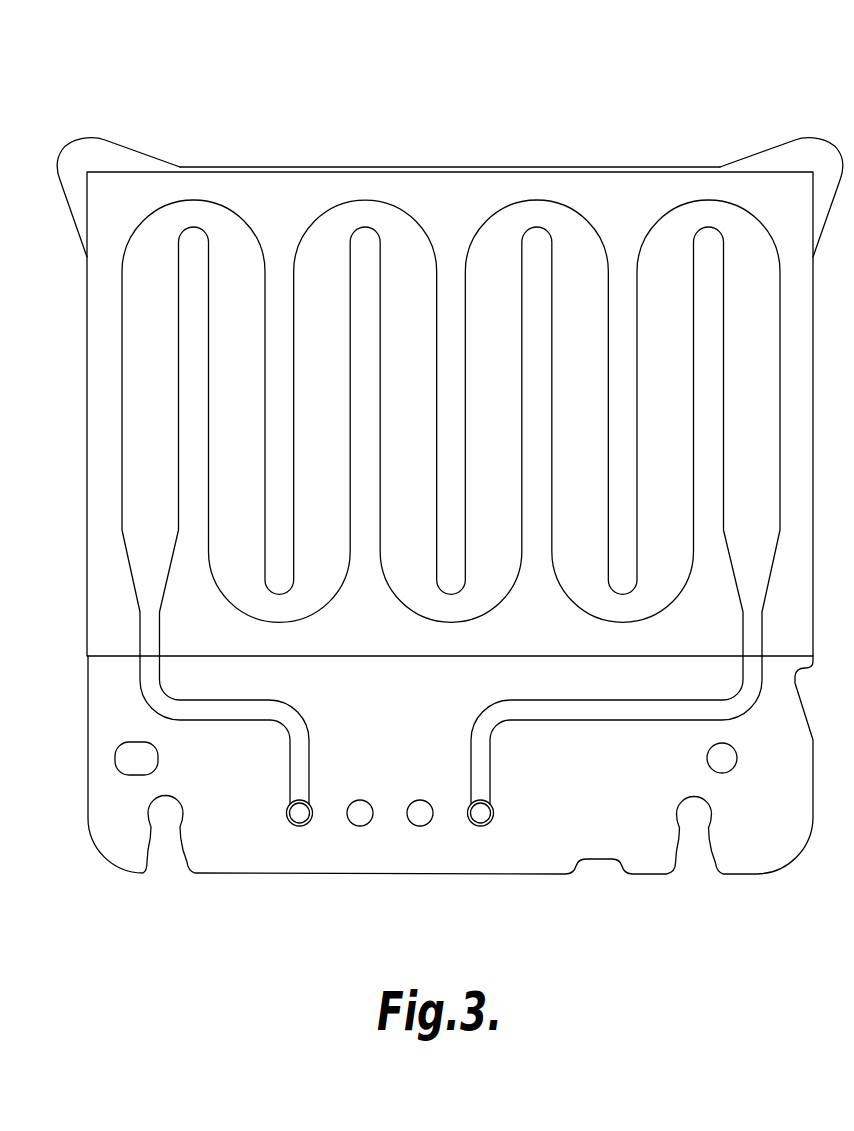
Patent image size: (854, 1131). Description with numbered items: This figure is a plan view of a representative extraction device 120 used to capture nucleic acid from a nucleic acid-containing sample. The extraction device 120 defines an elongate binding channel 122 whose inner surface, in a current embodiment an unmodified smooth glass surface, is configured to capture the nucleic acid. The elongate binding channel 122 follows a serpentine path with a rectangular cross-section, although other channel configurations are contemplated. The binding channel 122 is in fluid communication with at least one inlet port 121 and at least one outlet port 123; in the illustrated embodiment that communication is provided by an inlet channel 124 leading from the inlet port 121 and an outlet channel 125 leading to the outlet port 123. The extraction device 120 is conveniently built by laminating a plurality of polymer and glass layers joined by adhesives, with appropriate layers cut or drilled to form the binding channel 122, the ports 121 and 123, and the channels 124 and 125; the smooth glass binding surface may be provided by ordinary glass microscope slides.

The extraction device 120 is at (684, 104).
The inlet port 121 is at (292, 823).
The elongate binding channel 122 is at (208, 212).
The outlet port 123 is at (495, 825).
The inlet channel 124 is at (213, 715).
The outlet channel 125 is at (623, 713).